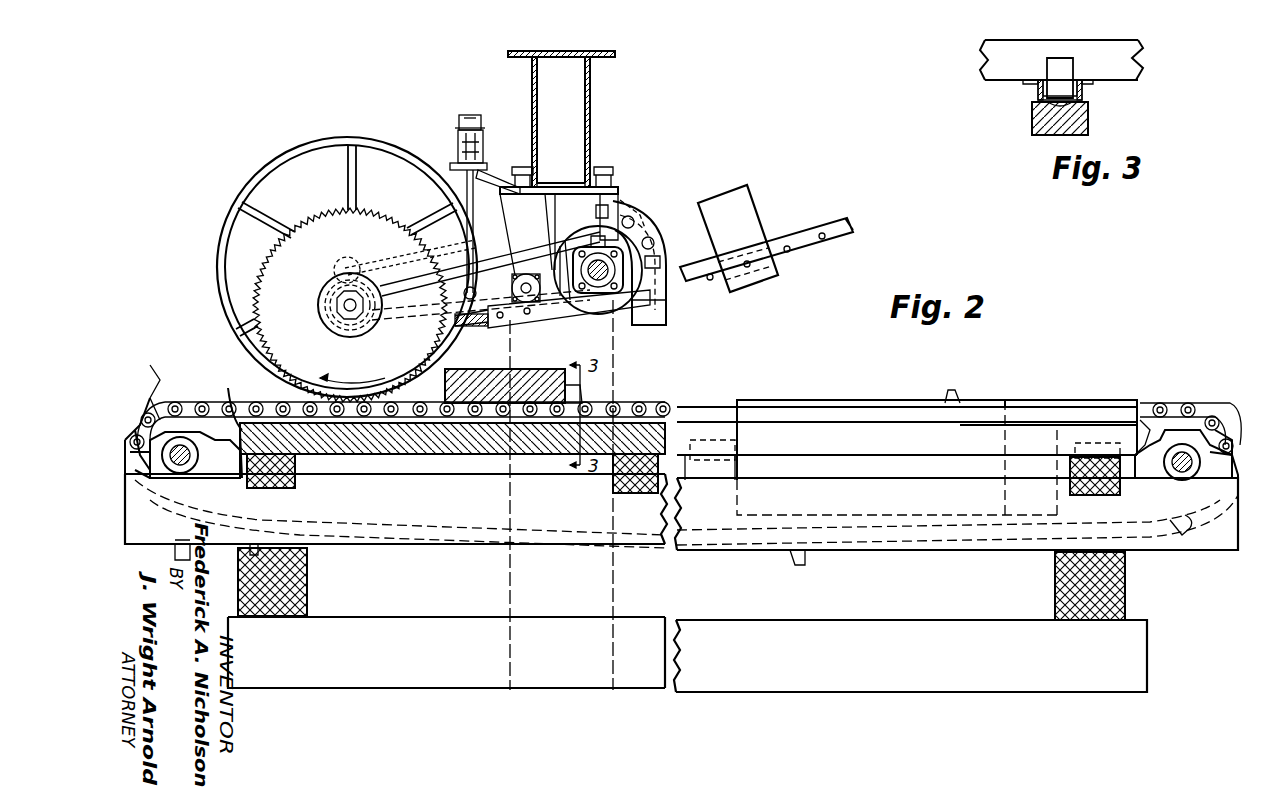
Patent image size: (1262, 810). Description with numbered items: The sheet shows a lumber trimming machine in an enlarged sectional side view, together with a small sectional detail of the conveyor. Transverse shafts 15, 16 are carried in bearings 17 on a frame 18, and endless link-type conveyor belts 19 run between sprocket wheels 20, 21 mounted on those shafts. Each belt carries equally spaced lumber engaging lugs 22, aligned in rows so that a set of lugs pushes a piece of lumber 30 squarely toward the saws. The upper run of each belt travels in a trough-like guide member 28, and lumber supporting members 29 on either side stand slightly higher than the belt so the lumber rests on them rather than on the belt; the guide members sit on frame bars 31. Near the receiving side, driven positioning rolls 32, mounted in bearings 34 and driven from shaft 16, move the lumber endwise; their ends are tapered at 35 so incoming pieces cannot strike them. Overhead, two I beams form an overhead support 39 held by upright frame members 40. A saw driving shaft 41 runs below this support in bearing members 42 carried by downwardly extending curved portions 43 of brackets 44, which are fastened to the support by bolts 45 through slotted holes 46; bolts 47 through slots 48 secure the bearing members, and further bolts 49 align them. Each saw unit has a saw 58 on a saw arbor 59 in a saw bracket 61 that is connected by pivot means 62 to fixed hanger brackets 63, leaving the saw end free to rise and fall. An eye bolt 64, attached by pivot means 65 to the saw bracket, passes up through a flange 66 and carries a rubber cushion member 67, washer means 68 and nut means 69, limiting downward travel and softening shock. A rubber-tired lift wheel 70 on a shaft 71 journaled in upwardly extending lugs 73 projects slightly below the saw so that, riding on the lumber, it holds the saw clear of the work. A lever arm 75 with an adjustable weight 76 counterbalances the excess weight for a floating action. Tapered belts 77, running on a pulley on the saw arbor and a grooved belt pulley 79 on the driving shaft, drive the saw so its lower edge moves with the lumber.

In FIG. 2, the transverse shaft 15 is at (180, 445).
In FIG. 2, the transverse shaft 16 is at (1184, 445).
In FIG. 2, the bearings 17 is at (140, 430).
In FIG. 2, the frame 18 is at (330, 630).
In FIG. 2, the conveyor belts 19 is at (655, 403).
In FIG. 3, the conveyor belts 19 is at (1080, 82).
In FIG. 2, the sprocket wheel 20 is at (233, 424).
In FIG. 2, the sprocket wheel 21 is at (1152, 422).
In FIG. 2, the lumber engaging lugs 22 is at (580, 395).
In FIG. 3, the lumber engaging lugs 22 is at (1060, 62).
In FIG. 3, the guide members 28 is at (1088, 112).
In FIG. 3, the lumber supporting members 29 is at (1023, 82).
In FIG. 2, the piece of lumber 30 is at (525, 380).
In FIG. 3, the piece of lumber 30 is at (1130, 45).
In FIG. 2, the frame bars 31 is at (455, 462).
In FIG. 3, the frame bars 31 is at (1032, 124).
In FIG. 2, the positioning rolls 32 is at (878, 398).
In FIG. 2, the bearings 34 is at (705, 440).
In FIG. 2, the tapered end 35 is at (1012, 398).
In FIG. 2, the overhead support 39 is at (590, 50).
In FIG. 2, the upright frame members 40 is at (613, 350).
In FIG. 2, the saw driving shaft 41 is at (597, 295).
In FIG. 2, the bearing members 42 is at (660, 243).
In FIG. 2, the curved bracket portions 43 is at (660, 310).
In FIG. 2, the brackets 44 is at (552, 200).
In FIG. 2, the bolts 45 is at (603, 168).
In FIG. 2, the slotted holes 46 is at (620, 200).
In FIG. 2, the bolts 47 is at (633, 220).
In FIG. 2, the slots 48 is at (650, 238).
In FIG. 2, the bolts 49 is at (612, 212).
In FIG. 2, the saw 58 is at (313, 214).
In FIG. 2, the saw arbor 59 is at (345, 305).
In FIG. 2, the saw bracket 61 is at (488, 312).
In FIG. 2, the pivot means 62 is at (527, 302).
In FIG. 2, the hanger brackets 63 is at (492, 185).
In FIG. 2, the eye bolt 64 is at (470, 115).
In FIG. 2, the pivot means 65 is at (462, 293).
In FIG. 2, the flange 66 is at (456, 163).
In FIG. 2, the cushion member 67 is at (458, 128).
In FIG. 2, the washer means 68 is at (480, 135).
In FIG. 2, the nut means 69 is at (466, 115).
In FIG. 2, the lift wheel 70 is at (348, 140).
In FIG. 2, the shaft 71 is at (338, 268).
In FIG. 2, the lugs 73 is at (352, 262).
In FIG. 2, the lever arm 75 is at (808, 245).
In FIG. 2, the weight 76 is at (750, 215).
In FIG. 2, the belts 77 is at (448, 265).
In FIG. 2, the belt pulley 79 is at (568, 300).